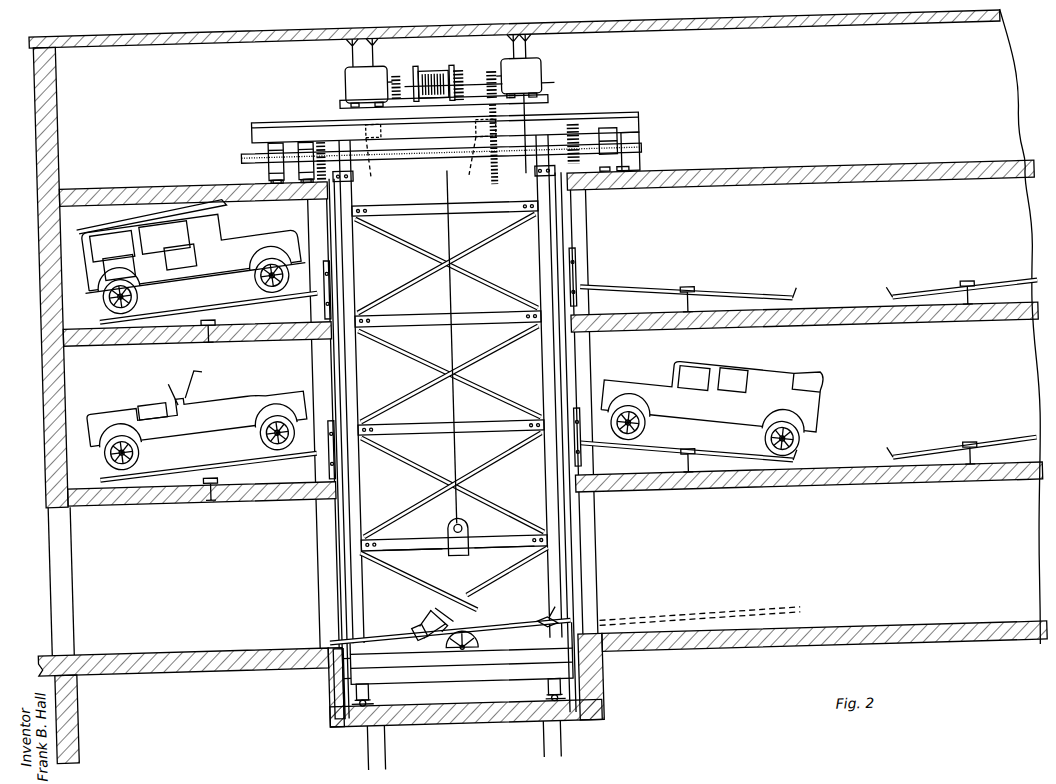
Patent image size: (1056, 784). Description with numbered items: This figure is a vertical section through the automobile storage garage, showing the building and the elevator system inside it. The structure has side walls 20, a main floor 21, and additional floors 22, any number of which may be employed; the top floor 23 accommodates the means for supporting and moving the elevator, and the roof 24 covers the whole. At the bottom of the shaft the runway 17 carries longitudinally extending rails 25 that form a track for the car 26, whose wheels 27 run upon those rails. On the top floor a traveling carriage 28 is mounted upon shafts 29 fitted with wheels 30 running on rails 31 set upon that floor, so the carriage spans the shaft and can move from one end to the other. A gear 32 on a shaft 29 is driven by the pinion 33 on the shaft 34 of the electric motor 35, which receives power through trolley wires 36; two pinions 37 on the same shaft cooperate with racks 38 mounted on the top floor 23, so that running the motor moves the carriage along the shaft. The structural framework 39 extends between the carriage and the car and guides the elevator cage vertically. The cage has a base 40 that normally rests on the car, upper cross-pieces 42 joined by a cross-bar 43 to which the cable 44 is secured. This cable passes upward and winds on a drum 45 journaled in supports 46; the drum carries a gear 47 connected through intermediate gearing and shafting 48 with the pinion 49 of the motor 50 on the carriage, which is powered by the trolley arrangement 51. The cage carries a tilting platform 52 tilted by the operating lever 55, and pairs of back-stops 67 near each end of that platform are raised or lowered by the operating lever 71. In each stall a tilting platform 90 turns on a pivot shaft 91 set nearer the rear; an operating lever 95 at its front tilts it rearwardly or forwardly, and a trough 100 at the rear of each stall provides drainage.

The runway 17 is at (425, 690).
The side walls 20 is at (0, 262).
The main floor 21 is at (178, 640).
The additional floors 22 is at (226, 311).
The top floor 23 is at (140, 153).
The roof 24 is at (170, 12).
The rails 25 is at (306, 680).
The car 26 is at (400, 650).
The wheels 27 is at (305, 668).
The traveling carriage 28 is at (555, 92).
The shafts 29 is at (210, 126).
The wheels 30 is at (582, 118).
The rails 31 is at (240, 151).
The gear 32 is at (494, 152).
The pinion 33 is at (488, 52).
The shaft 34 is at (507, 46).
The electric motor 35 is at (557, 83).
The trolley wires 36 is at (547, 45).
The pinions 37 is at (487, 128).
The racks 38 is at (444, 174).
The structural framework 39 is at (474, 270).
The base 40 is at (284, 656).
The upper cross-pieces 42 is at (419, 538).
The cross-bar 43 is at (416, 503).
The cable 44 is at (468, 347).
The drum 45 is at (398, 45).
The supports 46 is at (443, 70).
The gear 47 is at (424, 46).
The intermediate gearing and shafting 48 is at (426, 130).
The pinion 49 is at (311, 46).
The motor 50 is at (270, 113).
The trolley arrangement 51 is at (341, 53).
The tilting platform 52 is at (430, 618).
The operating lever 55 is at (421, 624).
The back-stops 67 is at (541, 609).
The operating lever 71 is at (432, 611).
The tilting platform 90 is at (226, 273).
The pivot shaft 91 is at (160, 311).
The operating lever 95 is at (284, 240).
The trough 100 is at (830, 281).